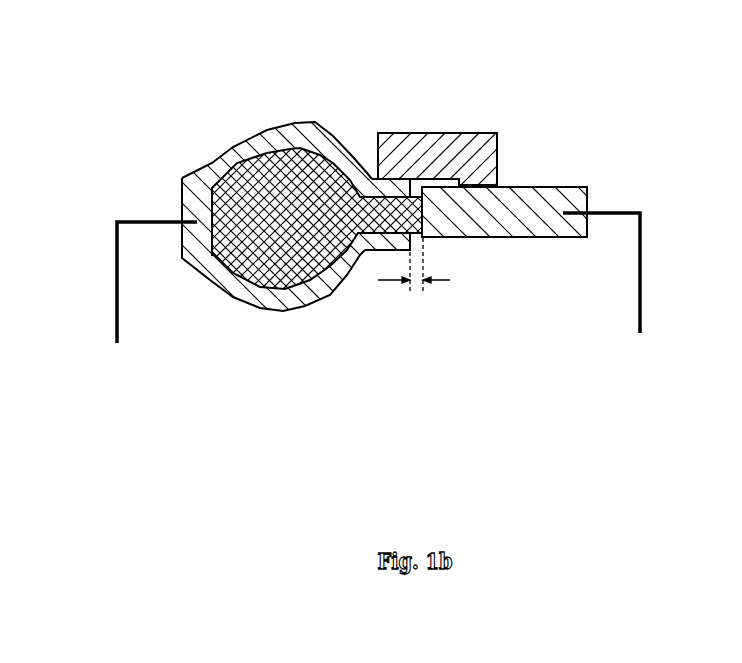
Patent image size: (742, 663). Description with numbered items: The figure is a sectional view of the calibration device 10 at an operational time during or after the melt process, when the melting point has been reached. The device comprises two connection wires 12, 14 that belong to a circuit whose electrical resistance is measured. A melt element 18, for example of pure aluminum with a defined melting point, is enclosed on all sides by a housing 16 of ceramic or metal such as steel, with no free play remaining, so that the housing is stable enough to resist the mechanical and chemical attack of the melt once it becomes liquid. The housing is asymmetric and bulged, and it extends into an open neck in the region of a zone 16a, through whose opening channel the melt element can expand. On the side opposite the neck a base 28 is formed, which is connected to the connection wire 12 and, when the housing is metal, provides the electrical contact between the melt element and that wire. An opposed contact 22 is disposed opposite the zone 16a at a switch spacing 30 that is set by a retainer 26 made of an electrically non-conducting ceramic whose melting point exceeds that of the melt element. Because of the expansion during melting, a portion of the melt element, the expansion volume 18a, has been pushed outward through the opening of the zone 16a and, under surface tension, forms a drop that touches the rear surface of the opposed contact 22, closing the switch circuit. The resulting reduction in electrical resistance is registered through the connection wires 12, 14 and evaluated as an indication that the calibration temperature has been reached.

The calibration device 10 is at (230, 320).
The connection wire 12 is at (114, 287).
The connection wire 14 is at (640, 302).
The housing 16 is at (305, 140).
The zone 16a is at (380, 240).
The melt element 18 is at (293, 270).
The expansion volume 18a is at (415, 235).
The opposed contact 22 is at (562, 185).
The retainer 26 is at (450, 132).
The base 28 is at (195, 188).
The switch spacing 30 is at (443, 283).